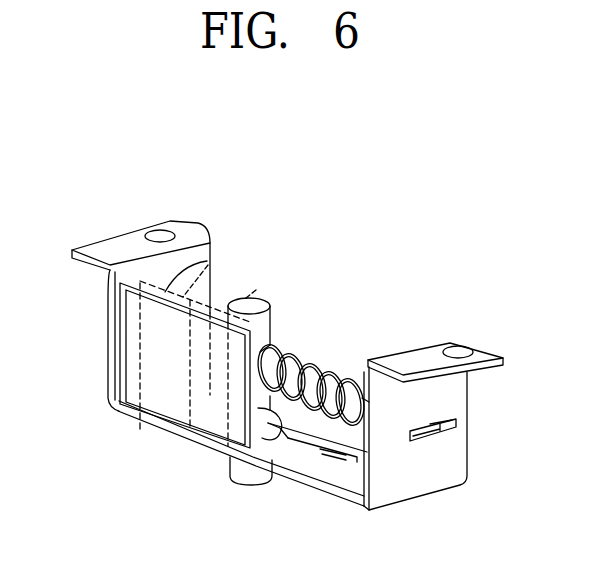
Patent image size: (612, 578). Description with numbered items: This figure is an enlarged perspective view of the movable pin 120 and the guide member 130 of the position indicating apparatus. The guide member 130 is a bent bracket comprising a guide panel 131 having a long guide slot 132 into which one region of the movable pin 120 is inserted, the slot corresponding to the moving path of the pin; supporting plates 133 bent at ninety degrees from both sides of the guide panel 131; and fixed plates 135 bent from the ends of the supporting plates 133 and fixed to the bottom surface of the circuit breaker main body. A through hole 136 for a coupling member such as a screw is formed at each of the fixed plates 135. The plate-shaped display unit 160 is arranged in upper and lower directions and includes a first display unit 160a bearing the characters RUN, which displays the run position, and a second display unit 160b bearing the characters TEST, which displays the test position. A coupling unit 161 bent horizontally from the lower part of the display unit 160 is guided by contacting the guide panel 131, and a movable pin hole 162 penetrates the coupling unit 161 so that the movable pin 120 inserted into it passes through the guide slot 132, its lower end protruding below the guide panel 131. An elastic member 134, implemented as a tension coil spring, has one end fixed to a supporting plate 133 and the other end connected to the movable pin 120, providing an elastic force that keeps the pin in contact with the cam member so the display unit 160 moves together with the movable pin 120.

The guide member 130 is at (424, 262).
The movable pin 120 is at (267, 330).
The guide panel 131 is at (232, 467).
The guide slot 132 is at (366, 440).
The supporting plate 133 is at (460, 456).
The elastic member 134 is at (325, 355).
The fixed plate 135 is at (112, 243).
The through hole 136 is at (155, 240).
The display unit 160 is at (170, 432).
The first display unit 160a is at (256, 290).
The second display unit 160b is at (208, 265).
The coupling unit 161 is at (292, 430).
The movable pin hole 162 is at (276, 446).